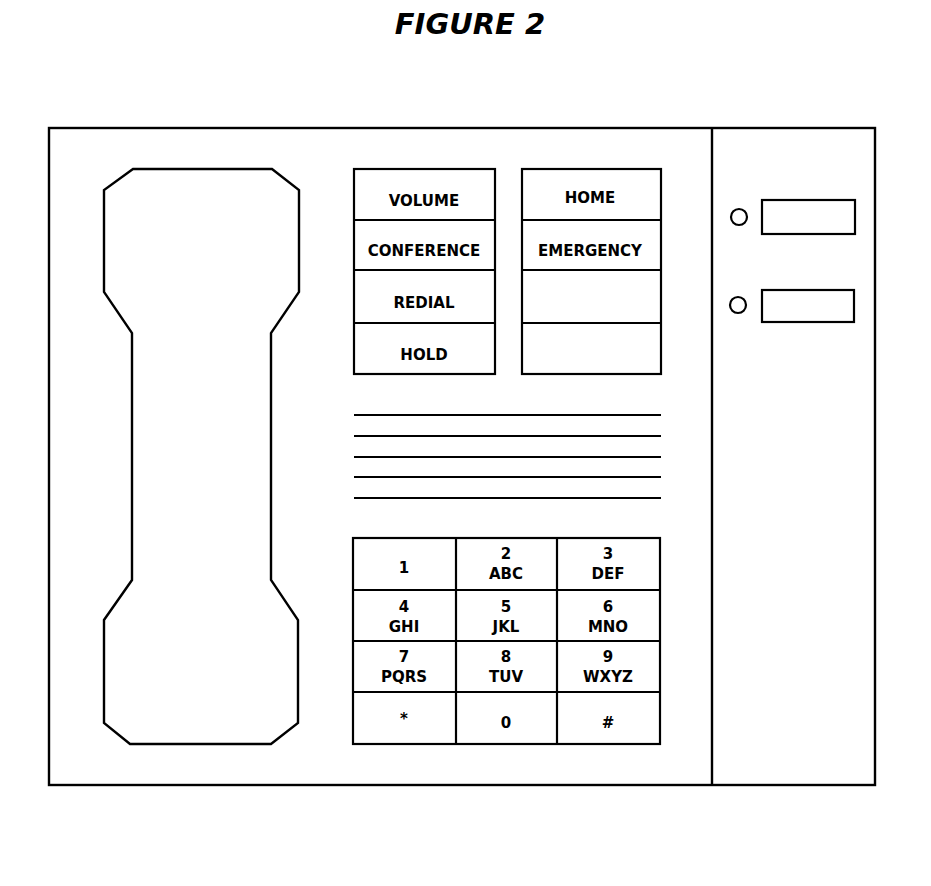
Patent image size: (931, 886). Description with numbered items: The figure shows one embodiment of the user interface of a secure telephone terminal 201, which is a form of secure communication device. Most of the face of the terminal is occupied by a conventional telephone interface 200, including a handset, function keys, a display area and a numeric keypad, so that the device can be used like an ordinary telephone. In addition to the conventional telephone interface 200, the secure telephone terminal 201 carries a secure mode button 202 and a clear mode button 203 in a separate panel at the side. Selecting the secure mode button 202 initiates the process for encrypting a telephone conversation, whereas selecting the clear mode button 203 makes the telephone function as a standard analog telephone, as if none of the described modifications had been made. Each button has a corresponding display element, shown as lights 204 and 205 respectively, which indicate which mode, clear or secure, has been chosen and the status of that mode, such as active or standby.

The conventional telephone interface 200 is at (53, 128).
The secure telephone terminal 201 is at (875, 806).
The secure mode button 202 is at (790, 200).
The clear mode button 203 is at (790, 290).
The light 204 is at (745, 209).
The light 205 is at (744, 311).